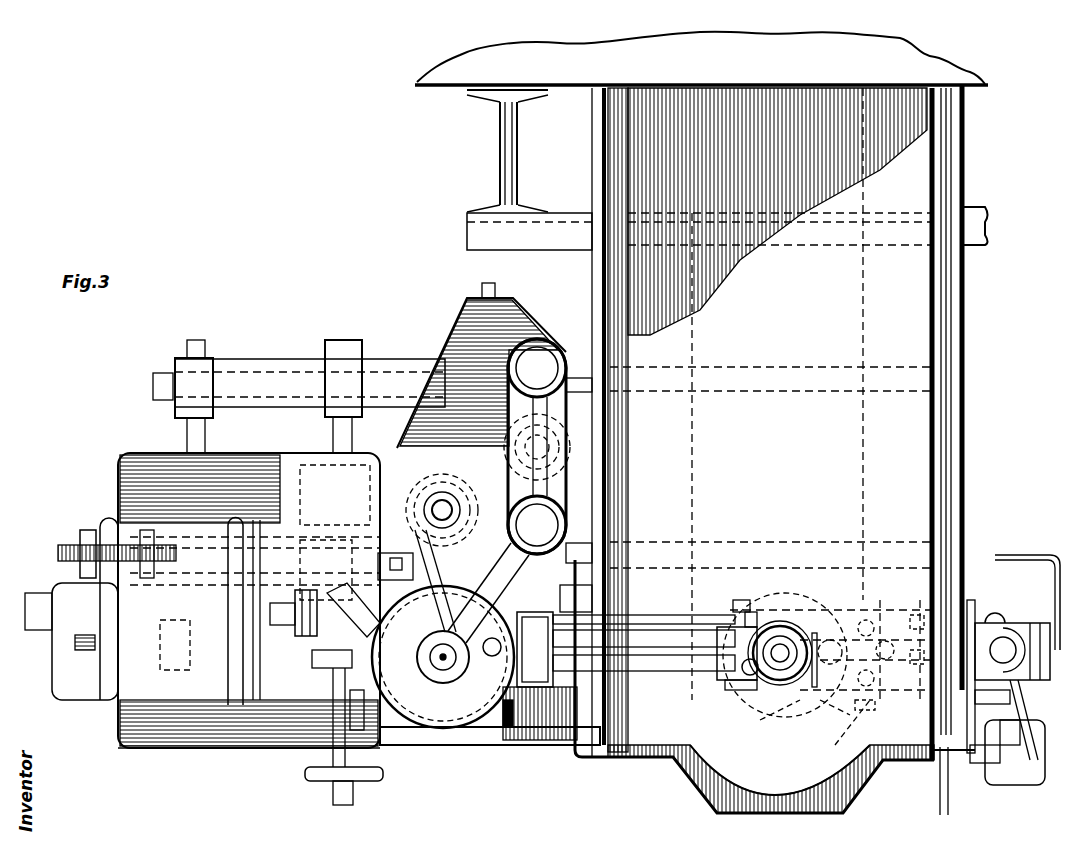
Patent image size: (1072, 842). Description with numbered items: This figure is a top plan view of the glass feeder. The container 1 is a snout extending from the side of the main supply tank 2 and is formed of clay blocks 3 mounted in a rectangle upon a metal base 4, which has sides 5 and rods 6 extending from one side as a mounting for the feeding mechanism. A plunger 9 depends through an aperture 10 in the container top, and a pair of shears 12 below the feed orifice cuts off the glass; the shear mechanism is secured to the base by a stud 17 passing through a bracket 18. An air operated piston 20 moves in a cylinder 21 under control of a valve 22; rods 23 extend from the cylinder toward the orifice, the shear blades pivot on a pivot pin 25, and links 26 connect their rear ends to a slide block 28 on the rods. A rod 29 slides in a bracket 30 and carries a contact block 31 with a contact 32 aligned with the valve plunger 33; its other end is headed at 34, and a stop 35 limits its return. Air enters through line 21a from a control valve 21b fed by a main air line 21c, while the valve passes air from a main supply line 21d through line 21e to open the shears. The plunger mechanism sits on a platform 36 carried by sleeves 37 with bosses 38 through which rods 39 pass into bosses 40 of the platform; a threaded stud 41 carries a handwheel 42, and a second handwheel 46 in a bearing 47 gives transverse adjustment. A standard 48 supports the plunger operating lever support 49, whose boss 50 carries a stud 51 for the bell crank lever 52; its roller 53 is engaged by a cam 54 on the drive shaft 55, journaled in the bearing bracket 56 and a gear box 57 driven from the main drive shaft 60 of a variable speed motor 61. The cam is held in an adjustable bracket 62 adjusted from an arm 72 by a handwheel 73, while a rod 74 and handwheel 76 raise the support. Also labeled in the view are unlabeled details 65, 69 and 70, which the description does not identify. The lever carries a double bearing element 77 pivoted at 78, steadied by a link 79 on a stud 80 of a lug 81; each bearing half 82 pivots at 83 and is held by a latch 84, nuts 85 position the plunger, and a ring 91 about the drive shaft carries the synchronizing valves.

The container 1 is at (908, 228).
The main supply tank 2 is at (683, 50).
The clay blocks 3 is at (637, 262).
The metal base 4 is at (943, 465).
The sides 5 is at (955, 348).
The rods 6 is at (592, 388).
The plunger 9 is at (783, 640).
The aperture 10 is at (775, 625).
The shears 12 is at (775, 705).
The stud 17 is at (1010, 627).
The bracket 18 is at (990, 622).
The air operated piston 20 is at (915, 615).
The cylinder 21 is at (815, 680).
The air supply line 21a is at (230, 680).
The control valve 21b is at (333, 670).
The main air line 21c is at (338, 700).
The main supply line 21d is at (945, 775).
The line 21e is at (1020, 785).
The valve 22 is at (948, 752).
The rods 23 is at (825, 712).
The pivot pin 25 is at (832, 640).
The links 26 is at (870, 618).
The slide block 28 is at (890, 640).
The rod 29 is at (895, 720).
The bracket 30 is at (1000, 750).
The contact block 31 is at (1003, 660).
The contact 32 is at (1020, 745).
The valve plunger 33 is at (1008, 763).
The headed end 34 is at (845, 740).
The stop 35 is at (1010, 690).
The platform 36 is at (245, 475).
The sleeves 37 is at (380, 360).
The bosses 38 is at (213, 380).
The rods 39 is at (190, 430).
The bosses 40 is at (190, 640).
The threaded stud 41 is at (60, 565).
The handwheel 42 is at (80, 540).
The handwheel 46 is at (385, 775).
The bearing 47 is at (310, 748).
The standard 48 is at (505, 440).
The plunger operating lever support 49 is at (494, 494).
The boss 50 is at (575, 600).
The stud 51 is at (510, 745).
The bell crank lever 52 is at (690, 670).
The roller 53 is at (480, 690).
The cam 54 is at (450, 745).
The drive shaft 55 is at (440, 680).
The bearing bracket 56 is at (575, 430).
The gear box 57 is at (480, 745).
The main drive shaft 60 is at (305, 635).
The variable speed motor 61 is at (100, 660).
The adjustable bracket 62 is at (430, 610).
The idler pulley 65 is at (425, 512).
The hub flange 69 is at (425, 660).
The stand 70 is at (405, 740).
The arm 72 is at (442, 492).
The handwheel 73 is at (410, 505).
The rod 74 is at (560, 480).
The handwheel 76 is at (570, 455).
The double bearing element 77 is at (715, 690).
The pivot 78 is at (745, 695).
The link 79 is at (700, 625).
The stud 80 is at (540, 660).
The lug 81 is at (600, 580).
The bearing half 82 is at (780, 680).
The pivot 83 is at (715, 705).
The latch 84 is at (790, 645).
The nuts 85 is at (735, 612).
The ring 91 is at (375, 690).